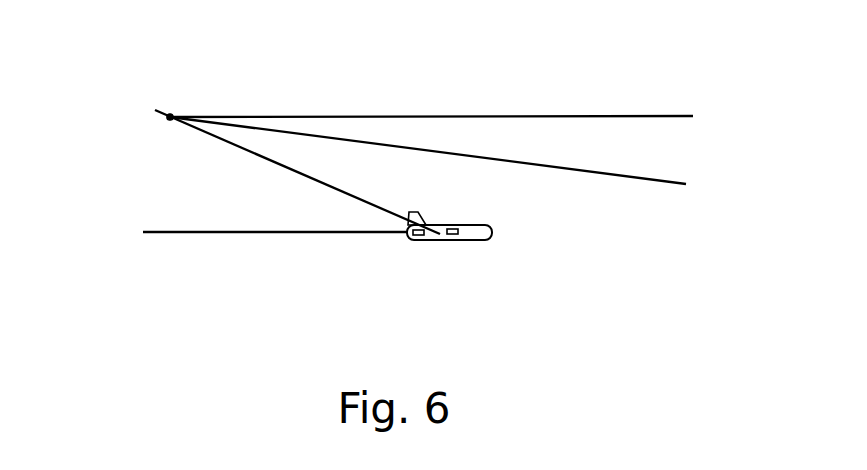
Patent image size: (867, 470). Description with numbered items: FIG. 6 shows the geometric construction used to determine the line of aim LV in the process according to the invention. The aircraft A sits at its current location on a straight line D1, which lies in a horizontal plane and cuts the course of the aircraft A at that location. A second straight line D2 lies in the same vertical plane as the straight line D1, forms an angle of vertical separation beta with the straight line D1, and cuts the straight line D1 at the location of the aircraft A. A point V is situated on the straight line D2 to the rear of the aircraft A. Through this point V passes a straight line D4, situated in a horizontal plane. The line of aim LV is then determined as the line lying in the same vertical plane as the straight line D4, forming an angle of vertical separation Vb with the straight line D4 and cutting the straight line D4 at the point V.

The point V is at (172, 115).
The straight line D4 is at (657, 114).
The straight line D2 is at (226, 140).
The line of aim LV is at (652, 183).
The angle of vertical separation Vb is at (579, 120).
The straight line D1 is at (184, 233).
The angle of vertical separation beta is at (320, 184).
The aircraft A is at (478, 233).